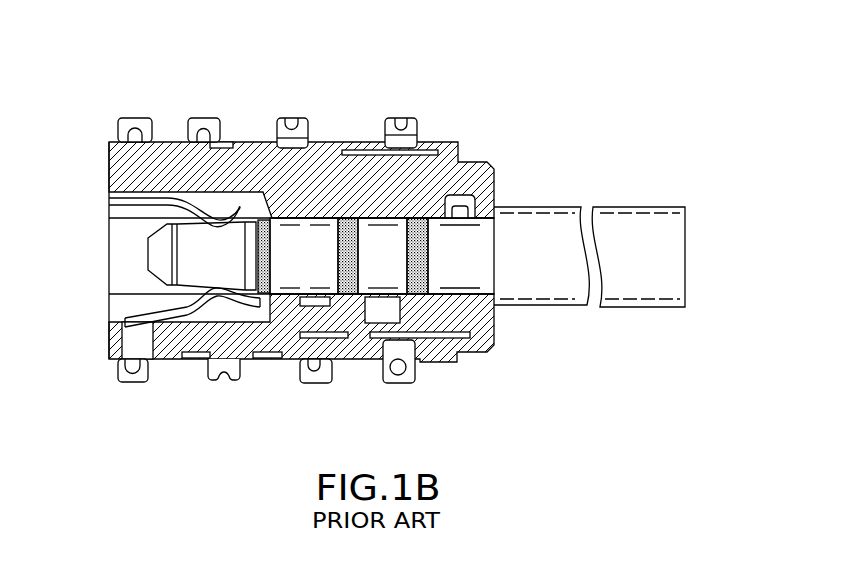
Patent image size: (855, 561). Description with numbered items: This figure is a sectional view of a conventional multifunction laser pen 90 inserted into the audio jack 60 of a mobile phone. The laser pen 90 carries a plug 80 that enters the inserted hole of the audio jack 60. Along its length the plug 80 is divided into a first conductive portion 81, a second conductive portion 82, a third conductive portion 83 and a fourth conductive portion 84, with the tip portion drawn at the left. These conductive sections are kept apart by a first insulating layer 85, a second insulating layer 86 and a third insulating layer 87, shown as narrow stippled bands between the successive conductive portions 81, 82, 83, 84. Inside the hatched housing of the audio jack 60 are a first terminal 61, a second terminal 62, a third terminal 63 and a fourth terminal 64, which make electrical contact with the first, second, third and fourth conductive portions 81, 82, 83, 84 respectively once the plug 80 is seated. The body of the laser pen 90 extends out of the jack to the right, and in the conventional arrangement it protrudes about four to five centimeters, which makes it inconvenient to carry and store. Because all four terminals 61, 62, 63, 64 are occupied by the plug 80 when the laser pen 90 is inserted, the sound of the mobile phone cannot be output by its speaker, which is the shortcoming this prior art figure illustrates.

The audio jack 60 is at (368, 229).
The first terminal 61 is at (215, 297).
The second terminal 62 is at (313, 300).
The third terminal 63 is at (380, 305).
The fourth terminal 64 is at (472, 165).
The plug 80 is at (321, 160).
The first conductive portion 81 is at (197, 255).
The second conductive portion 82 is at (295, 250).
The third conductive portion 83 is at (378, 242).
The fourth conductive portion 84 is at (461, 185).
The first insulating layer 85 is at (265, 255).
The second insulating layer 86 is at (347, 247).
The third insulating layer 87 is at (413, 242).
The laser pen 90 is at (540, 228).